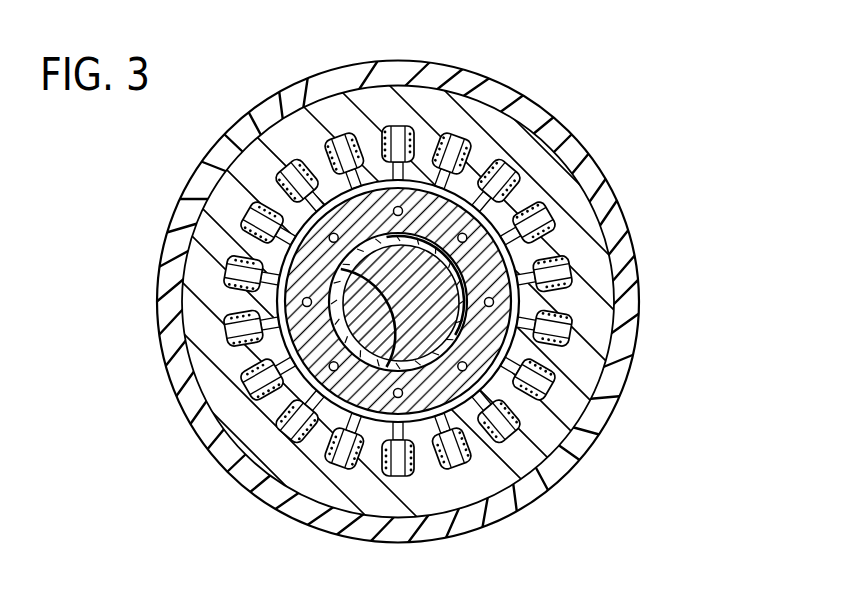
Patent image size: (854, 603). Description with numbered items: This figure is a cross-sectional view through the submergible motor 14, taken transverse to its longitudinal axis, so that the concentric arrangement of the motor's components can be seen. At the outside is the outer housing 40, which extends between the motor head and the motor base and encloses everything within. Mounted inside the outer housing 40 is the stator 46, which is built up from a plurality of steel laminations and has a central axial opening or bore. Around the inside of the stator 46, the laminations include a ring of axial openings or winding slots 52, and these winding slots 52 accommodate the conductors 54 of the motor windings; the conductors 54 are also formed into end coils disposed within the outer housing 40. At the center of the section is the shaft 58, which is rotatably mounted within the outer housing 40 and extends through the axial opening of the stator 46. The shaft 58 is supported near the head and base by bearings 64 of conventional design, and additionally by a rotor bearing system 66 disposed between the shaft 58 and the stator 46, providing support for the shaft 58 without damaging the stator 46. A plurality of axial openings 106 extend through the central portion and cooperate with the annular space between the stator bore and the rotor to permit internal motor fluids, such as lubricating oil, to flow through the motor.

The submergible motor 14 is at (543, 86).
The outer housing 40 is at (632, 300).
The stator 46 is at (550, 437).
The winding slots 52 is at (260, 187).
The conductors 54 is at (303, 196).
The shaft 58 is at (372, 318).
The bearings 64 is at (386, 241).
The rotor bearing system 66 is at (324, 424).
The axial openings 106 is at (462, 232).